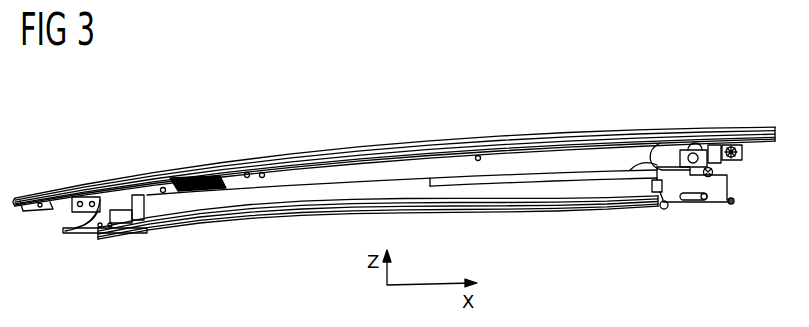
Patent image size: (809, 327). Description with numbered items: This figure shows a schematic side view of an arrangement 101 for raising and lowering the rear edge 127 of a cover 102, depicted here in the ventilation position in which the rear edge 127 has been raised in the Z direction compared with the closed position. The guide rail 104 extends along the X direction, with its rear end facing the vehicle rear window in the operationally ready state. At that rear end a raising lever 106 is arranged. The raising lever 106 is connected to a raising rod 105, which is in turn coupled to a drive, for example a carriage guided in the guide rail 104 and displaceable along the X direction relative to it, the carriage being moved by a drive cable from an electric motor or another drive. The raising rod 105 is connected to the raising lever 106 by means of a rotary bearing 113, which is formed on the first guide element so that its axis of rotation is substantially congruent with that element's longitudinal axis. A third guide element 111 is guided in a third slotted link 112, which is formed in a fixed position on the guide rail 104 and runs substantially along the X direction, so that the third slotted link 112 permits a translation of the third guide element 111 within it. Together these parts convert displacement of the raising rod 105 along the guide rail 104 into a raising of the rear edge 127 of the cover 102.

The arrangement 101 is at (703, 72).
The cover 102 is at (510, 133).
The guide rail 104 is at (232, 203).
The raising rod 105 is at (657, 143).
The raising lever 106 is at (710, 145).
The third guide element 111 is at (710, 208).
The third slotted link 112 is at (685, 197).
The rotary bearing 113 is at (720, 172).
The rear edge 127 is at (773, 128).